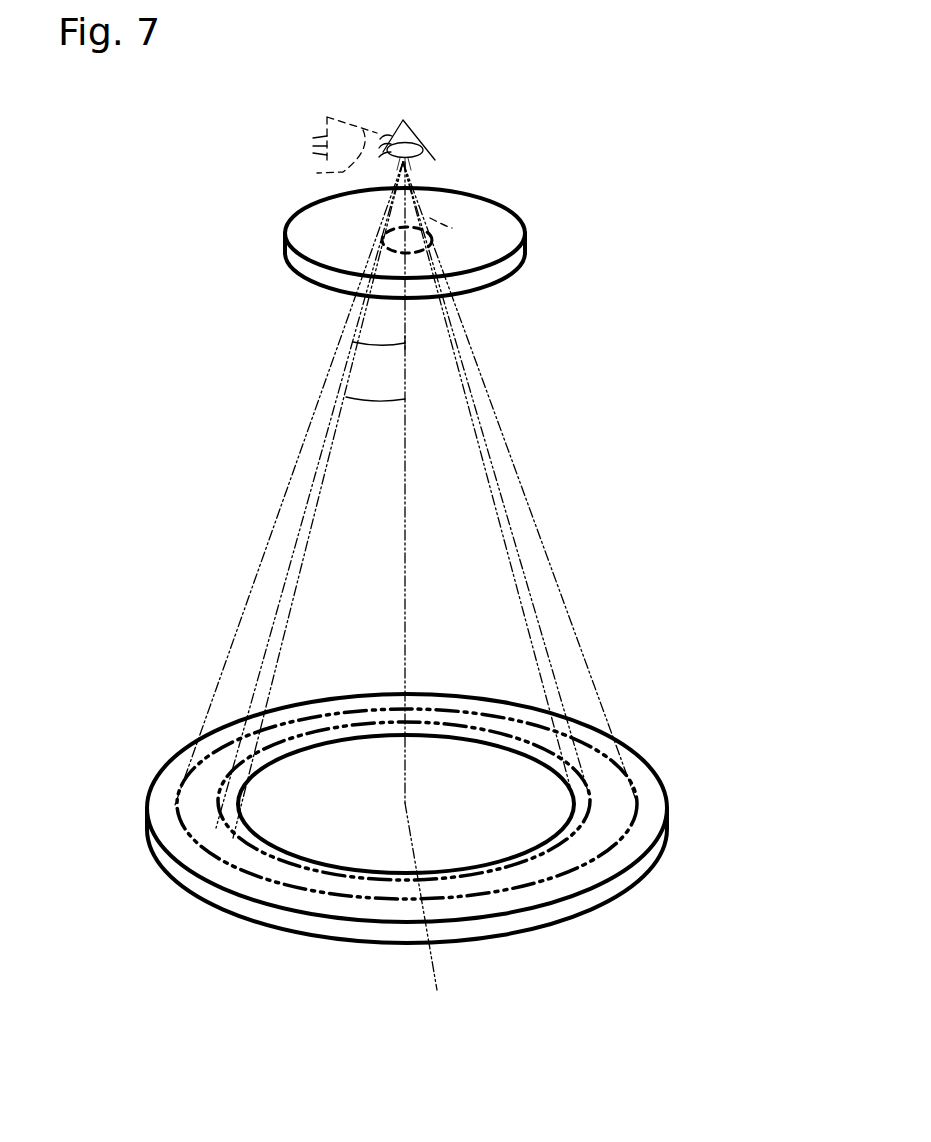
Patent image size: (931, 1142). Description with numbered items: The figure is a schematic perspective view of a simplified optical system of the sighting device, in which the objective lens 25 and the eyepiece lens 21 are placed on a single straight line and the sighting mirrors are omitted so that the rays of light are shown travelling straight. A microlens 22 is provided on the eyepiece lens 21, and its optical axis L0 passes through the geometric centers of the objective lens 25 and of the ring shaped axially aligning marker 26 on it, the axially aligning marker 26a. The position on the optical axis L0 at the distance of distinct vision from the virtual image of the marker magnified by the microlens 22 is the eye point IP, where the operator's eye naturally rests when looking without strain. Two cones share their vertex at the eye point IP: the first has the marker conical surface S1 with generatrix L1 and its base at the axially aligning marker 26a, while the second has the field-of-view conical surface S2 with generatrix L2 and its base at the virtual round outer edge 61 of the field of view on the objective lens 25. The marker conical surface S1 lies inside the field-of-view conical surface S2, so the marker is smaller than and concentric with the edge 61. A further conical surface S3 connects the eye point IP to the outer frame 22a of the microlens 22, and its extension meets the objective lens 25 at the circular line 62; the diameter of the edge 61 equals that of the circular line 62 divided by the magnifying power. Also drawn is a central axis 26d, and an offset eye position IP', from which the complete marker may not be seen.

The eyepiece lens 21 is at (287, 220).
The microlens 22 is at (437, 247).
The outer frame of the microlens 22a is at (430, 218).
The objective lens 25 is at (667, 795).
The ring shaped axially aligning marker 26 is at (268, 842).
The axially aligning marker 26a is at (567, 823).
The central axis 26d is at (444, 918).
The virtual round outer edge of the field of view 61 is at (327, 872).
The circular line 62 is at (483, 893).
The eye point IP is at (473, 151).
The another point offset from the optical axis IP' is at (304, 145).
The optical axis L0 is at (407, 571).
The generatrix of the marker conical surface L1 is at (305, 542).
The generatrix of the field-of-view conical surface L2 is at (310, 484).
The marker conical surface S1 is at (477, 411).
The field-of-view conical surface S2 is at (500, 477).
The conical surface S3 is at (543, 540).